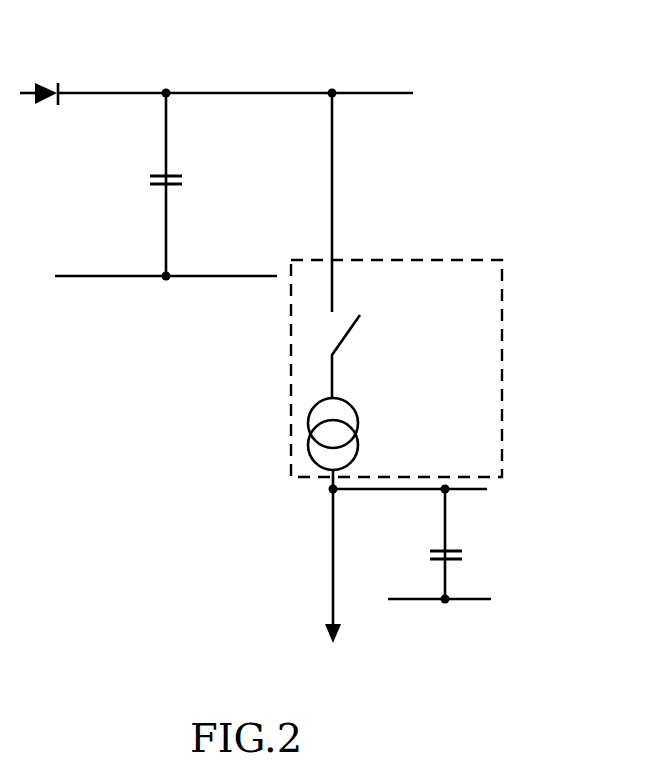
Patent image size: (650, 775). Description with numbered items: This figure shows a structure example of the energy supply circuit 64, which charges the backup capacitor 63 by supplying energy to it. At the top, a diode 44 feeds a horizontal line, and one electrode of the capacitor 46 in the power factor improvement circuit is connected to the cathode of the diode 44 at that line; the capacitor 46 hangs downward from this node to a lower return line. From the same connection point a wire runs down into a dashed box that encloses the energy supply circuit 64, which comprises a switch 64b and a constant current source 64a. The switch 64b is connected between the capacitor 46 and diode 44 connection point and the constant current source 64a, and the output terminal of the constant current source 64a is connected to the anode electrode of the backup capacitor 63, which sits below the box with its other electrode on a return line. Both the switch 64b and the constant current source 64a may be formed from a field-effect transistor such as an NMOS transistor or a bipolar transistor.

The diode 44 is at (43, 83).
The capacitor 46 is at (176, 172).
The energy supply circuit 64 is at (503, 318).
The constant current source 64a is at (358, 414).
The switch 64b is at (358, 323).
The backup capacitor 63 is at (460, 550).